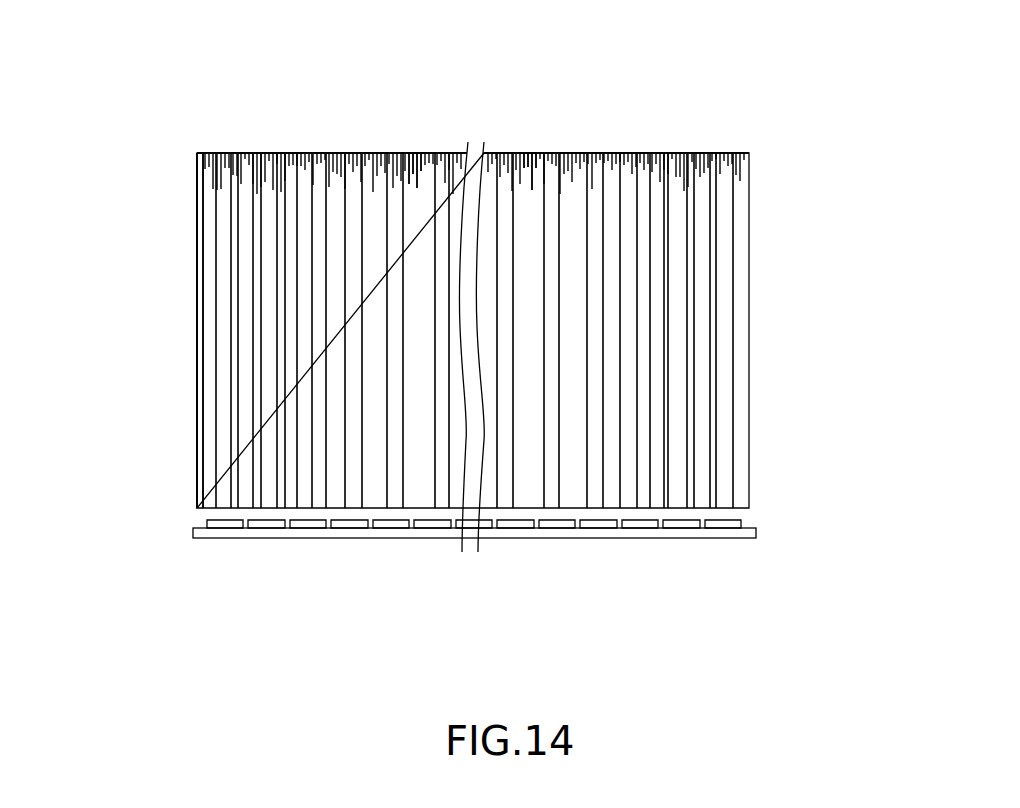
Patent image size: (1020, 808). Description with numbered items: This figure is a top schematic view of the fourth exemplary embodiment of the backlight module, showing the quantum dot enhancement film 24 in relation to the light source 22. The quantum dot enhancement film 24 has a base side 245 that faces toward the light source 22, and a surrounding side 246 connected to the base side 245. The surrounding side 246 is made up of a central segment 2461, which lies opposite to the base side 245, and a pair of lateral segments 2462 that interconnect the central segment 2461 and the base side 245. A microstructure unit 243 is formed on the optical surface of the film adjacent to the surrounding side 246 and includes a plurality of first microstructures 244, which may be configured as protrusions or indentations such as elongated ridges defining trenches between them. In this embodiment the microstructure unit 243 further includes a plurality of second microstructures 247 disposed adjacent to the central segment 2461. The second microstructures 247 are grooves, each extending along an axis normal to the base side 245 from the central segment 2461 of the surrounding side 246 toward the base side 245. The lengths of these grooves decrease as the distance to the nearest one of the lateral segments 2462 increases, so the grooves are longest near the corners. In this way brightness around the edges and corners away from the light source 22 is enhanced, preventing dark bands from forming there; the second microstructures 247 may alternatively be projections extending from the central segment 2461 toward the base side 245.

The light source 22 is at (755, 520).
The quantum dot enhancement film 24 is at (755, 218).
The microstructure unit 243 is at (197, 190).
The first microstructures 244 is at (247, 358).
The base side 245 is at (351, 508).
The surrounding side 246 is at (455, 153).
The central segment 2461 is at (613, 153).
The lateral segments 2462 is at (197, 262).
The second microstructures 247 is at (417, 153).